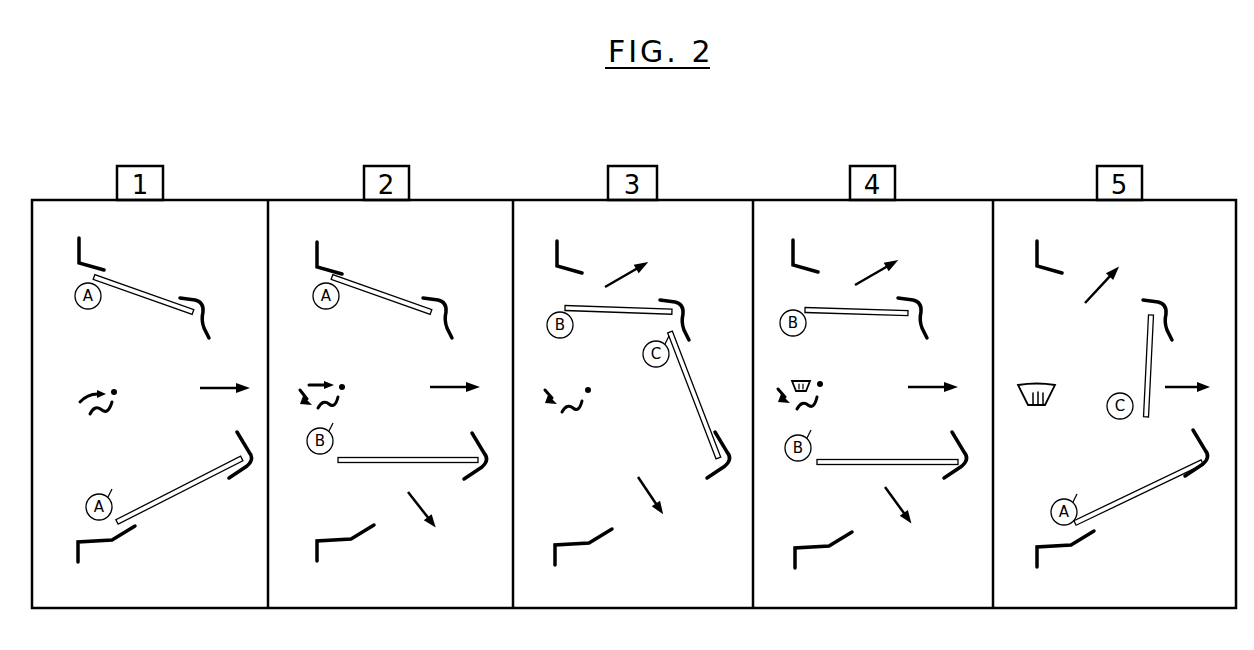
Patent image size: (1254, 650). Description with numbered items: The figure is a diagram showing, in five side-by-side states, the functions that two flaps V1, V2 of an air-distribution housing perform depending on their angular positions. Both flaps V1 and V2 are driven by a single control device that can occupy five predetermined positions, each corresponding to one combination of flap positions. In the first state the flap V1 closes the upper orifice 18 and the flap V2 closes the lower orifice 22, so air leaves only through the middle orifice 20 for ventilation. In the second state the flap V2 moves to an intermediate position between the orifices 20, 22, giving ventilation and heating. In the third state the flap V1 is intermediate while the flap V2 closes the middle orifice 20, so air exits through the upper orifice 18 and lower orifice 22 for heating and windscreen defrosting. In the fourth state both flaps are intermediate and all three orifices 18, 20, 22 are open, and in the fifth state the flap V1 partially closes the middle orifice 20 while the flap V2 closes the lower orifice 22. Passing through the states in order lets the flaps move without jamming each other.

The upper orifice 18 is at (108, 275).
The middle orifice 20 is at (209, 338).
The lower orifice 22 is at (140, 524).
The flap V1 is at (150, 304).
The flap V2 is at (185, 483).